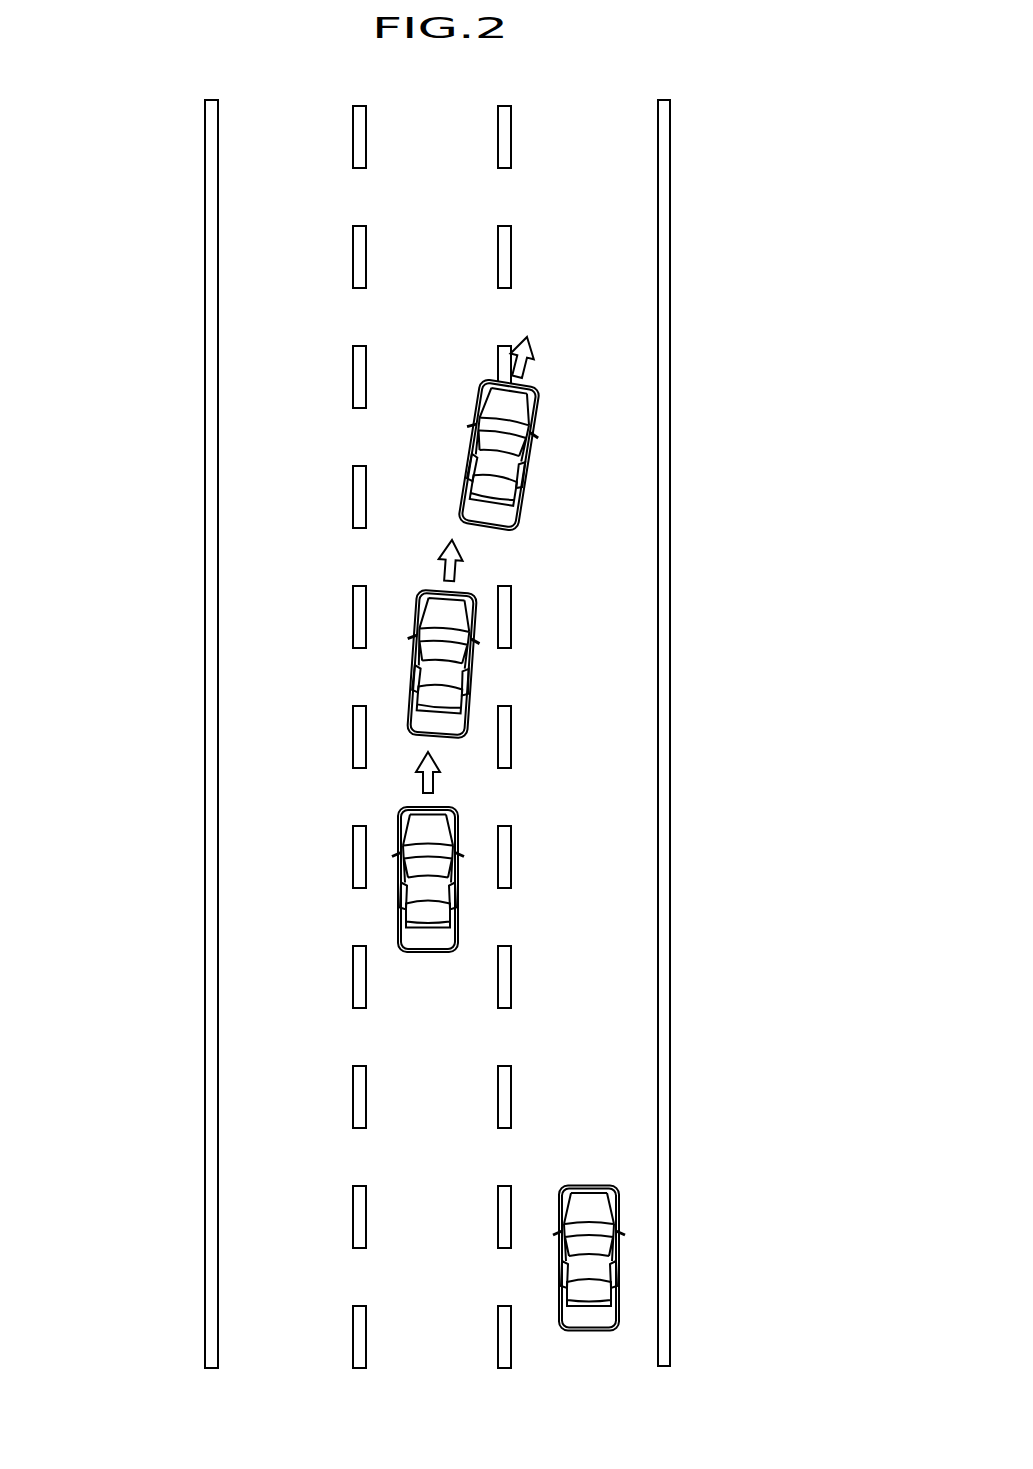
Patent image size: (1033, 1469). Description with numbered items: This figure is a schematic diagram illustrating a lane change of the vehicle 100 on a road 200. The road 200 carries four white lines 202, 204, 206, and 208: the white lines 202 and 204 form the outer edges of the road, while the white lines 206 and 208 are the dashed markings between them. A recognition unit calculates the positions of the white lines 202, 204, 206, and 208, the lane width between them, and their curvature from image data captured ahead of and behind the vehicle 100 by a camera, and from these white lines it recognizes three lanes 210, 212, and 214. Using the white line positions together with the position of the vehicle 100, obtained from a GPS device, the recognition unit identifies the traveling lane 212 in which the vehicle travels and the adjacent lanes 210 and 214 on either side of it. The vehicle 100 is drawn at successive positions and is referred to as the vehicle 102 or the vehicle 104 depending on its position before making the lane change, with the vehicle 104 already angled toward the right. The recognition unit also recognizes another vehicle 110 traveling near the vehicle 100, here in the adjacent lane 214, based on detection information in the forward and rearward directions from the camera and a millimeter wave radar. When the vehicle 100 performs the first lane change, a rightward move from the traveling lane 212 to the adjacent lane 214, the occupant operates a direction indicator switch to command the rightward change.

The vehicle 100 is at (398, 878).
The vehicle 102 is at (470, 663).
The vehicle 104 is at (530, 457).
The vehicle 110 is at (620, 1260).
The road 200 is at (438, 734).
The white line 202 is at (205, 212).
The white line 204 is at (670, 215).
The white line 206 is at (353, 367).
The white line 208 is at (512, 857).
The adjacent lane 210 is at (287, 157).
The traveling lane 212 is at (433, 160).
The adjacent lane 214 is at (592, 157).